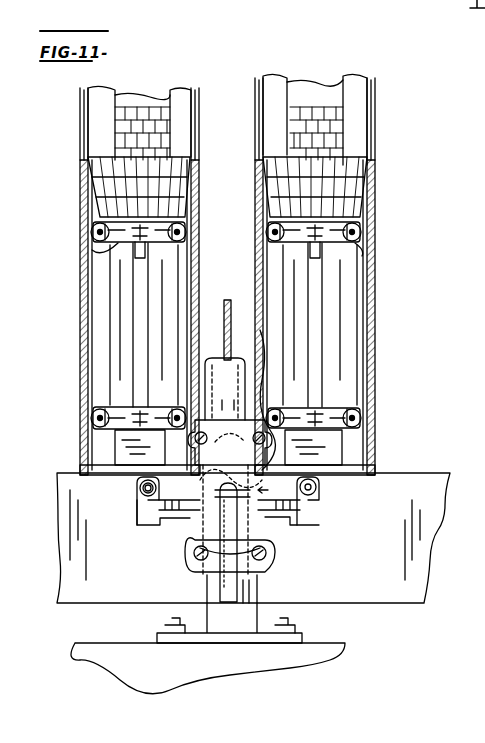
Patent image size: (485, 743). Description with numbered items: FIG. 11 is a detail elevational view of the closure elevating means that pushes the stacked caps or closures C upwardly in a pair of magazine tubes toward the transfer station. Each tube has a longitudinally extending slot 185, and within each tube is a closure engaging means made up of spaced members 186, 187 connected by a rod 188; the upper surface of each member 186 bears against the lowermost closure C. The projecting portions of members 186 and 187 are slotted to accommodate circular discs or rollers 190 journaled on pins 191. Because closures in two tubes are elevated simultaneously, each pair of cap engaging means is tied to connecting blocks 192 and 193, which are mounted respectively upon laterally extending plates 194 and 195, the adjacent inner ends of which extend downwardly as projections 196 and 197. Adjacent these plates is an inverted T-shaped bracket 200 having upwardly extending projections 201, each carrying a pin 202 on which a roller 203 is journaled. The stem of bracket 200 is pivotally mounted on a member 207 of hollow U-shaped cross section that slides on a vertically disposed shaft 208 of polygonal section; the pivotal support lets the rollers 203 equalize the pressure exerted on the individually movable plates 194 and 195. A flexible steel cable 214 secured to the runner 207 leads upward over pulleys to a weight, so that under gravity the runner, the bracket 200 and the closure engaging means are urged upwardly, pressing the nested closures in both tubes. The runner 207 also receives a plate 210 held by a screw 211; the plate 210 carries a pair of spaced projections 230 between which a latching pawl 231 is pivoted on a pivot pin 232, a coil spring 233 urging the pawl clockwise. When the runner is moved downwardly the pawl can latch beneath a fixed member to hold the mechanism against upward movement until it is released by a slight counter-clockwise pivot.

The longitudinally extending slots 185 is at (162, 88).
The caps or closures C is at (195, 170).
The circular discs or rollers 190 is at (92, 233).
The pins 191 is at (186, 236).
The closure engaging member 186 is at (112, 252).
The rod 188 is at (136, 282).
The closure engaging member 187 is at (125, 410).
The connecting block 193 is at (122, 440).
The connecting block 192 is at (340, 445).
The laterally extending plate 195 is at (112, 470).
The flexible cable 214 is at (240, 290).
The downwardly extending projection 197 is at (230, 442).
The downwardly extending projection 196 is at (231, 461).
The laterally extending plate 194 is at (335, 478).
The roller 203 is at (137, 488).
The pin 202 is at (143, 492).
The upwardly extending projection 201 is at (140, 505).
The inverted T-shaped bracket 200 is at (162, 523).
The coil spring 233 is at (215, 490).
The runner member 207 is at (292, 510).
The plate 210 is at (266, 549).
The pivot pin 232 is at (195, 548).
The screw 211 is at (196, 560).
The spaced projections 230 is at (240, 568).
The latching pawl 231 is at (240, 590).
The vertically disposed shaft 208 is at (205, 603).